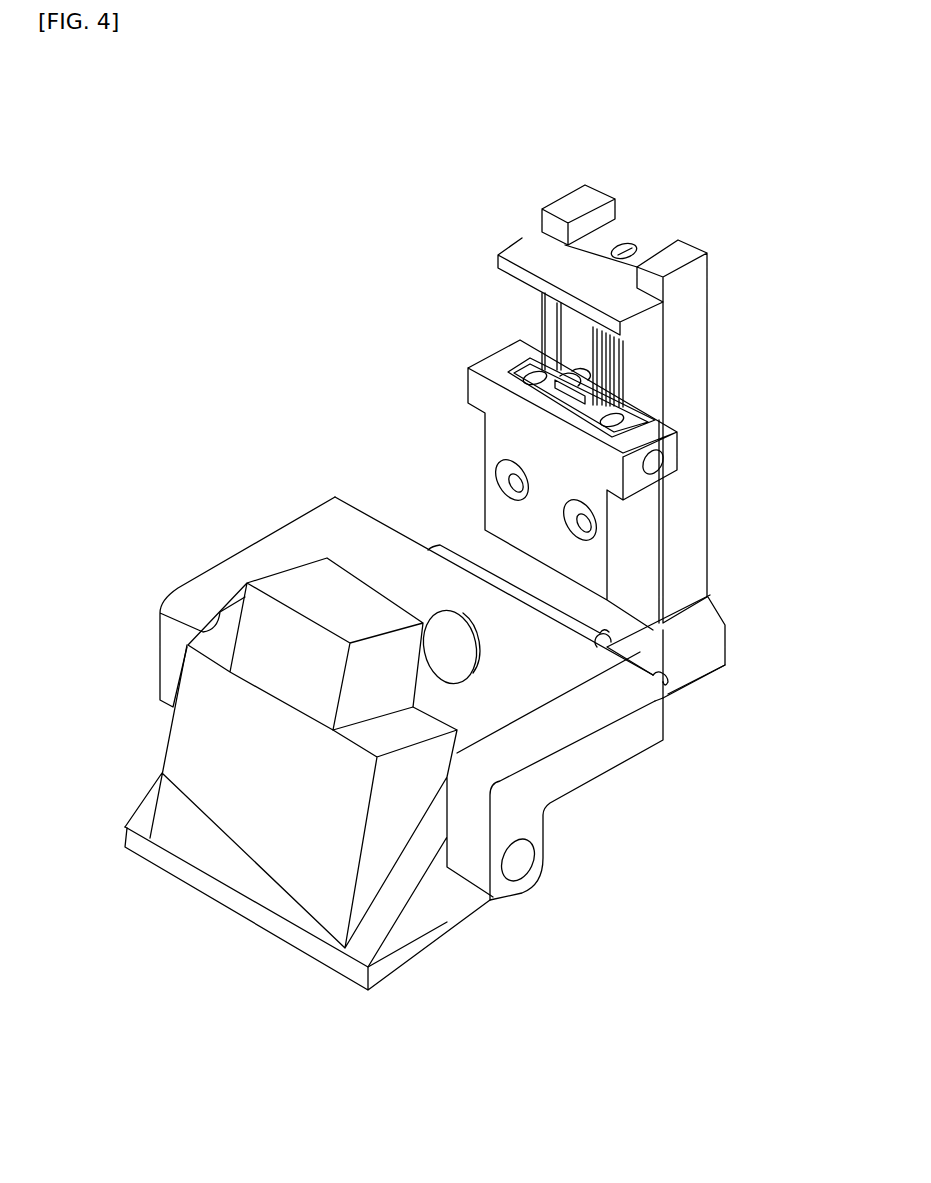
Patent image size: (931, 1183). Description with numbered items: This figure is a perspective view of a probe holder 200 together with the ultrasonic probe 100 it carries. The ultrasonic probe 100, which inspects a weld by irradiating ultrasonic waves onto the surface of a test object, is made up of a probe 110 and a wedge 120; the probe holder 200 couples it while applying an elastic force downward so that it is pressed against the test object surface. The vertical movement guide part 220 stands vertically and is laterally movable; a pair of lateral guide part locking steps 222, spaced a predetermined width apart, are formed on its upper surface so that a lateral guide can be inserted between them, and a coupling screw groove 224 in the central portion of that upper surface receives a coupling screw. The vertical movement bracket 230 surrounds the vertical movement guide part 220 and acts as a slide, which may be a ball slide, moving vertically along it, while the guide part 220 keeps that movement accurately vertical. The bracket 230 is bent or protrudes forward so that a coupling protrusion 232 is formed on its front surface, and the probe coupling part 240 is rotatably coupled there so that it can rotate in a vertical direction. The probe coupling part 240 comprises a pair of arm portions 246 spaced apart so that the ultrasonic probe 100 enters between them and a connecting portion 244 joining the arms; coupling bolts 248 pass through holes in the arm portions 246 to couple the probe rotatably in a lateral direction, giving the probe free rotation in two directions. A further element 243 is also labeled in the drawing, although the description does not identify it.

The ultrasonic probe 100 is at (483, 1110).
The probe 110 is at (277, 873).
The wedge 120 is at (432, 950).
The probe holder 200 is at (655, 180).
The vertical movement guide part 220 is at (692, 370).
The lateral guide part locking steps 222 is at (540, 210).
The coupling screw groove 224 is at (622, 247).
The vertical movement bracket 230 is at (540, 583).
The coupling protrusion 232 is at (662, 637).
The probe coupling part 240 is at (755, 785).
The roller 243 is at (440, 637).
The connecting portion 244 is at (557, 722).
The arm portions 246 is at (242, 567).
The coupling bolts 248 is at (520, 862).